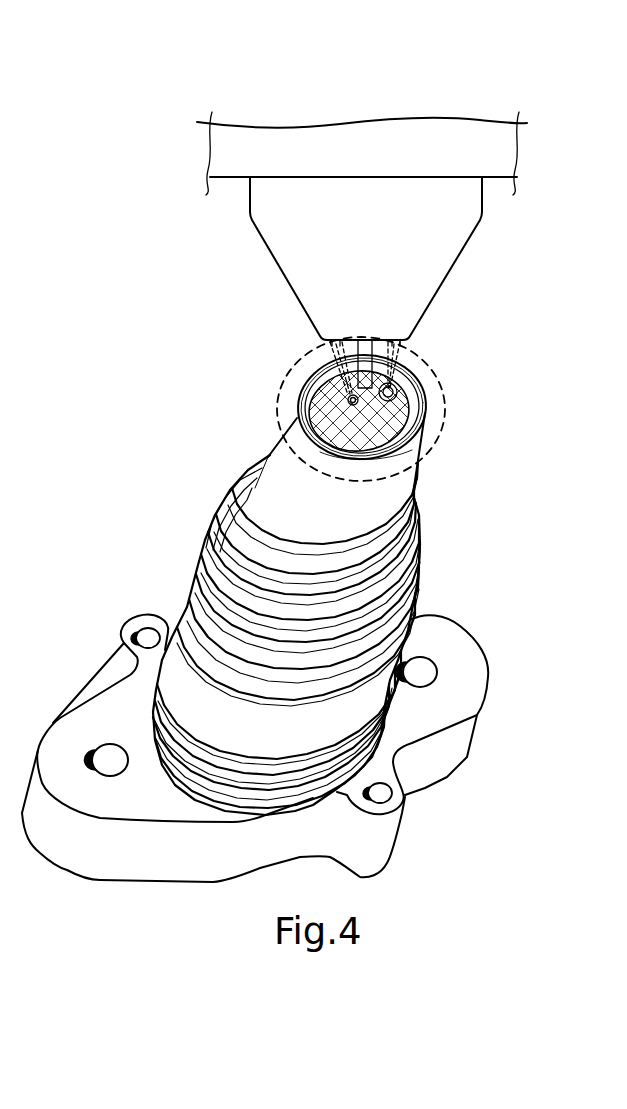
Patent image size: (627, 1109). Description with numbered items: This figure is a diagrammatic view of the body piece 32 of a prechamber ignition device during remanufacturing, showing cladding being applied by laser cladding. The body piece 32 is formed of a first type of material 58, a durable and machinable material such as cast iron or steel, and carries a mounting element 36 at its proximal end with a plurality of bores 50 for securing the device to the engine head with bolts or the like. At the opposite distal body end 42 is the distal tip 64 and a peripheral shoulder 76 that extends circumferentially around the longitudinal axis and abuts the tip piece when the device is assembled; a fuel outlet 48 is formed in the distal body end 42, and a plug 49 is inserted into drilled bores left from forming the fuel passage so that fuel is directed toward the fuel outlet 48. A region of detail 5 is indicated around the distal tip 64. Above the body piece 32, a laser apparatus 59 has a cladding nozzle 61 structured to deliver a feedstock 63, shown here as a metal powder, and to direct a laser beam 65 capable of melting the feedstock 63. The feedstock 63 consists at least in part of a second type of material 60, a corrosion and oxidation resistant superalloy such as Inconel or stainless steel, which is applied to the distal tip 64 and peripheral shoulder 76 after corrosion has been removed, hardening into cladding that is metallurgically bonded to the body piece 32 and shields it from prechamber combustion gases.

The nozzle region detail 5 is at (447, 421).
The body piece 32 is at (413, 565).
The mounting element 36 is at (478, 738).
The distal body end 42 is at (297, 418).
The fuel outlet 48 is at (348, 386).
The plug 49 is at (397, 380).
The bores 50 is at (150, 634).
The first type of material 58 is at (318, 358).
The laser apparatus 59 is at (519, 145).
The second type of material 60 is at (413, 453).
The cladding nozzle 61 is at (450, 268).
The feedstock 63 is at (322, 348).
The distal tip 64 is at (413, 413).
The laser beam 65 is at (362, 340).
The peripheral shoulder 76 is at (307, 399).